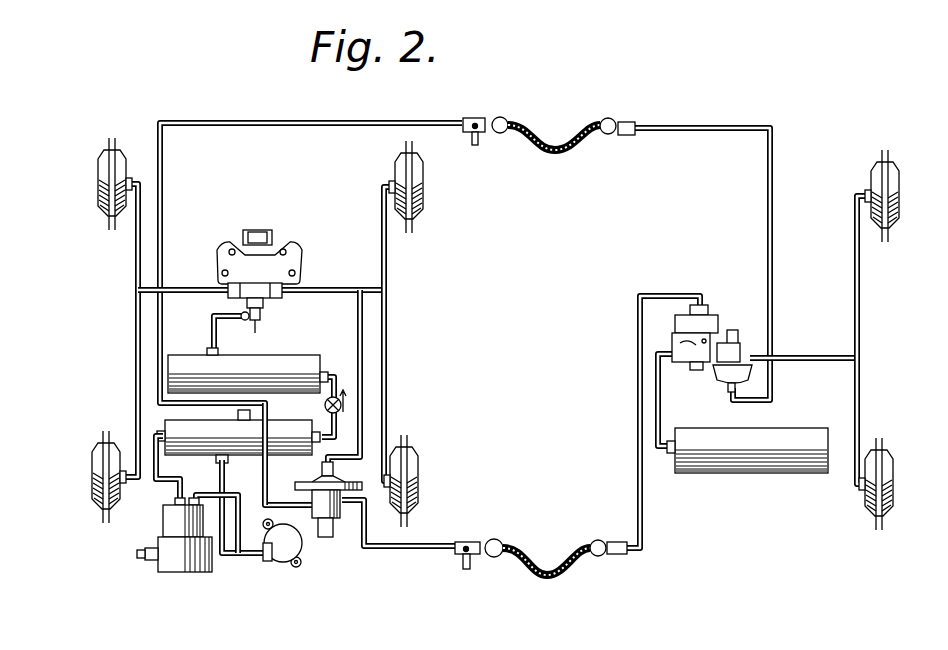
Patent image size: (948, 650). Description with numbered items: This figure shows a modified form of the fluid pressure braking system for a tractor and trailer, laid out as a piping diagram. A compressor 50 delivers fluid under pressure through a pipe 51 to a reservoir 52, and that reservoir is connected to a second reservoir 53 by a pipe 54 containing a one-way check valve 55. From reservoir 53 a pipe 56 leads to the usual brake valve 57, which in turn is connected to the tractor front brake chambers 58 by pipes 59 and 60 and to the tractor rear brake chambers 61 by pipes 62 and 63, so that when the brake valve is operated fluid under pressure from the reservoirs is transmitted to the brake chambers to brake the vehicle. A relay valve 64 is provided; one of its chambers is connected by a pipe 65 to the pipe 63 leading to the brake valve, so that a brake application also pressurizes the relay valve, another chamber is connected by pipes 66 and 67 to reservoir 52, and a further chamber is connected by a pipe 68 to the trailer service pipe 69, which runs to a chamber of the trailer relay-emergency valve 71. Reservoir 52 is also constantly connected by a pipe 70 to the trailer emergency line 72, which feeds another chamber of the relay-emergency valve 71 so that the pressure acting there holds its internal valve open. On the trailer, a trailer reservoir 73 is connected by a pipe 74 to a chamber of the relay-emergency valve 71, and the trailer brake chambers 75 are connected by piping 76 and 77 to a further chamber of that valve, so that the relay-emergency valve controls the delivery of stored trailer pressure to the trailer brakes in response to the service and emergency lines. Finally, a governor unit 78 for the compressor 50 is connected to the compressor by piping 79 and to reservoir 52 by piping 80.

The compressor 50 is at (173, 556).
The pipe 51 is at (168, 481).
The reservoir 52 is at (209, 448).
The second reservoir 53 is at (273, 368).
The pipe 54 is at (336, 374).
The one-way check valve 55 is at (324, 405).
The pipe 56 is at (212, 330).
The brake valve 57 is at (283, 256).
The tractor front brake chambers 58 is at (104, 182).
The pipe 59 is at (187, 278).
The pipe 60 is at (134, 270).
The tractor rear brake chambers 61 is at (420, 188).
The pipe 62 is at (388, 270).
The pipe 63 is at (324, 289).
The relay valve 64 is at (310, 476).
The pipe 65 is at (357, 320).
The pipe 66 is at (262, 483).
The pipe 67 is at (240, 413).
The pipe 68 is at (414, 549).
The trailer service pipe 69 is at (637, 400).
The pipe 70 is at (276, 126).
The trailer relay-emergency valve 71 is at (706, 313).
The trailer emergency line 72 is at (706, 132).
The trailer reservoir 73 is at (751, 458).
The pipe 74 is at (661, 400).
The trailer brake chambers 75 is at (899, 196).
The piping 76 is at (858, 375).
The piping 77 is at (805, 357).
The governor unit 78 is at (298, 545).
The piping 79 is at (243, 532).
The piping 80 is at (231, 559).